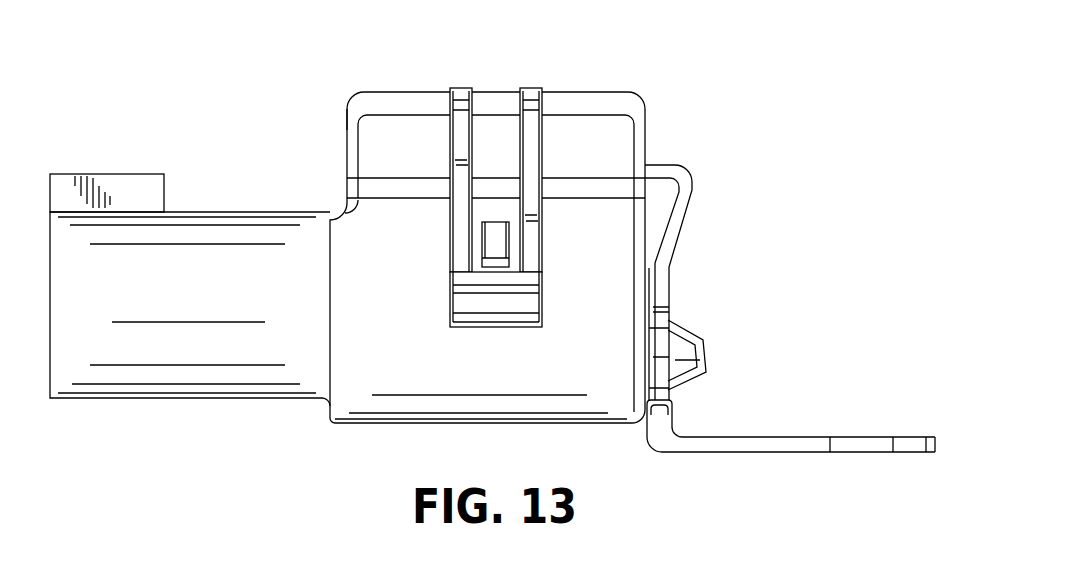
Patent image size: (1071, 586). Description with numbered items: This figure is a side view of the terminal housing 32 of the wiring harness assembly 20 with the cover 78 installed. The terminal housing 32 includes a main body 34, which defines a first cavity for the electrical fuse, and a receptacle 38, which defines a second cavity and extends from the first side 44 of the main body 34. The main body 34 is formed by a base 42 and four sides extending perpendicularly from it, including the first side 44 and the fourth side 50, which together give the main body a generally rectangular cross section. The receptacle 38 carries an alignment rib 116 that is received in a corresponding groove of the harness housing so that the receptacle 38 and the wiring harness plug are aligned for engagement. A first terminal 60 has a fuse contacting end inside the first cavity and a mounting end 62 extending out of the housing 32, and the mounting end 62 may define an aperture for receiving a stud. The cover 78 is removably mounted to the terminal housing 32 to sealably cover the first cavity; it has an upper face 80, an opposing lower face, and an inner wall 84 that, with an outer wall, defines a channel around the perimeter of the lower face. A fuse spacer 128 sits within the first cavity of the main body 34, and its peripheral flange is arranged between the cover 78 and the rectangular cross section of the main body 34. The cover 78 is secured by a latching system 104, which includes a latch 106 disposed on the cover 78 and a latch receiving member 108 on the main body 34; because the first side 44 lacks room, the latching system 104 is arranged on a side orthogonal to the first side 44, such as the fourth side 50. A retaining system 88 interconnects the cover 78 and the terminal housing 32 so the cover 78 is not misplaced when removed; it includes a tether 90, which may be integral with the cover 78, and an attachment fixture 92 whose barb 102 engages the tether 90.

The wiring harness assembly 20 is at (700, 84).
The terminal housing 32 is at (318, 443).
The main body 34 is at (587, 352).
The receptacle 38 is at (104, 342).
The base 42 is at (384, 428).
The first side 44 is at (345, 208).
The fourth side 50 is at (585, 278).
The first terminal 60 is at (742, 447).
The mounting end 62 is at (873, 450).
The cover 78 is at (580, 103).
The upper face 80 is at (413, 90).
The inner wall 84 is at (383, 128).
The retaining system 88 is at (733, 332).
The tether 90 is at (683, 186).
The attachment fixture 92 is at (721, 384).
The barb 102 is at (692, 352).
The latching system 104 is at (426, 275).
The latch 106 is at (494, 307).
The latch receiving member 108 is at (497, 245).
The alignment rib 116 is at (75, 187).
The fuse spacer 128 is at (363, 188).